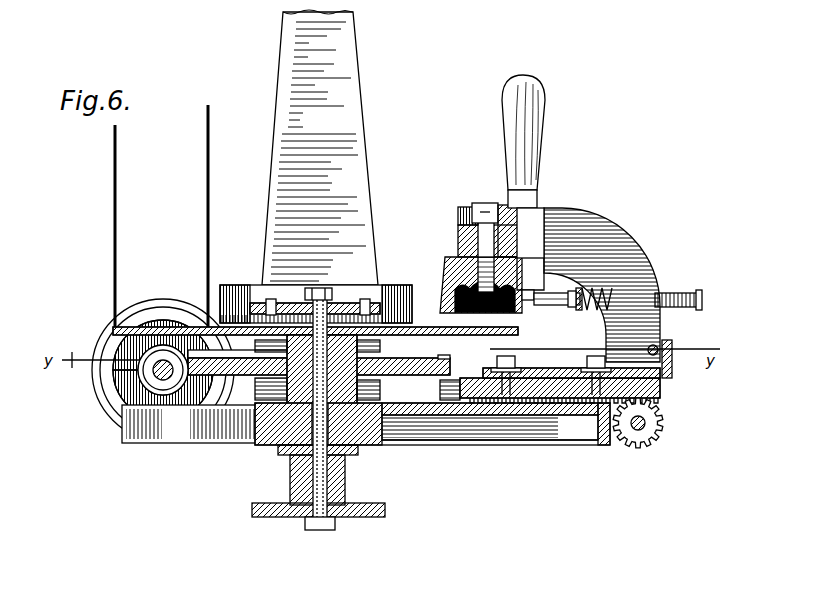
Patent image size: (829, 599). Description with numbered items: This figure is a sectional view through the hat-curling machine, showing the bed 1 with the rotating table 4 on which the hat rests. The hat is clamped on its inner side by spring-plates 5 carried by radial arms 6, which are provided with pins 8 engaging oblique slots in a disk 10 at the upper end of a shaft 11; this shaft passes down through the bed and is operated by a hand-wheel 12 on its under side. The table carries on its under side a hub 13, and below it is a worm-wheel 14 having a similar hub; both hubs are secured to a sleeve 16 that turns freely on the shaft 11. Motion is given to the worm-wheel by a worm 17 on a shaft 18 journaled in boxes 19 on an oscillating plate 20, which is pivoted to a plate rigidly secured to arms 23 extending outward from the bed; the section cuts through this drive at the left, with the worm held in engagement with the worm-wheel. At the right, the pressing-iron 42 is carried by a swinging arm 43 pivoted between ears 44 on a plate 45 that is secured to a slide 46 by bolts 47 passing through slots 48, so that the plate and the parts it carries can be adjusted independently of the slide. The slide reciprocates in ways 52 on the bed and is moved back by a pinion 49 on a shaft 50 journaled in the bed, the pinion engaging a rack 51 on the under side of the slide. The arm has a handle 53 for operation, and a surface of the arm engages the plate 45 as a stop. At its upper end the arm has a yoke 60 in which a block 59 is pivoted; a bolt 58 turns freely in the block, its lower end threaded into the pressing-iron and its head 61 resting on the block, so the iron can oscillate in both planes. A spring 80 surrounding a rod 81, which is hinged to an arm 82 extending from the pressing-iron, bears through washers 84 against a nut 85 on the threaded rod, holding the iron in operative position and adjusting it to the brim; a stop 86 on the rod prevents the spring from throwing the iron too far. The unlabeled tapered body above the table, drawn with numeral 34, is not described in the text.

The bed 1 is at (432, 437).
The rotating table 4 is at (113, 330).
The spring-plates 5 is at (246, 292).
The radial arms 6 is at (309, 308).
The pins 8 is at (270, 298).
The disk 10 is at (315, 299).
The shaft 11 is at (300, 473).
The hand-wheel 12 is at (368, 512).
The hub 13 is at (380, 346).
The worm-wheel 14 is at (448, 362).
The sleeve 16 is at (330, 425).
The worm 17 is at (128, 378).
The shaft 18 is at (163, 362).
The boxes 19 is at (104, 392).
The oscillating plate 20 is at (100, 408).
The arms 23 is at (199, 445).
The cone 34 is at (320, 147).
The pressing-iron 42 is at (446, 275).
The swinging arm 43 is at (614, 252).
The ears 44 is at (661, 352).
The plate 45 is at (667, 372).
The slide 46 is at (571, 381).
The bolts 47 is at (594, 356).
The slots 48 is at (600, 420).
The pinion 49 is at (652, 444).
The shaft 50 is at (638, 432).
The rack 51 is at (492, 442).
The ways 52 is at (439, 388).
The handle 53 is at (540, 146).
The bolt 58 is at (458, 245).
The block 59 is at (460, 220).
The yoke 60 is at (506, 206).
The head 61 is at (482, 206).
The spring 80 is at (598, 311).
The rod 81 is at (552, 306).
The arm 82 is at (529, 291).
The washers 84 is at (580, 290).
The nut 85 is at (565, 312).
The stop 86 is at (690, 292).